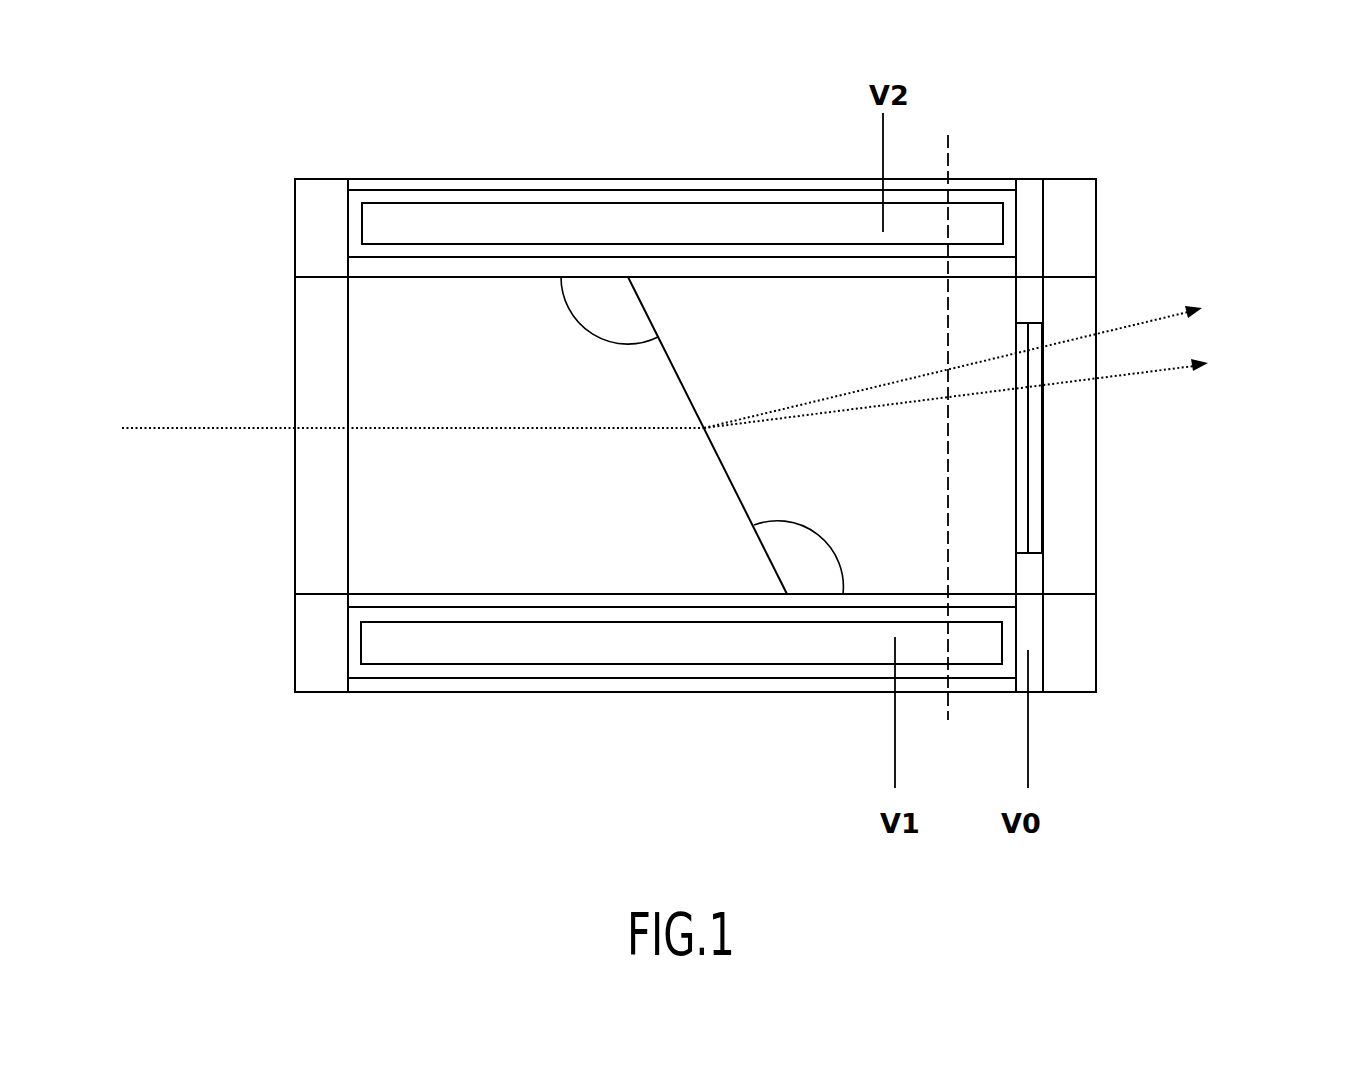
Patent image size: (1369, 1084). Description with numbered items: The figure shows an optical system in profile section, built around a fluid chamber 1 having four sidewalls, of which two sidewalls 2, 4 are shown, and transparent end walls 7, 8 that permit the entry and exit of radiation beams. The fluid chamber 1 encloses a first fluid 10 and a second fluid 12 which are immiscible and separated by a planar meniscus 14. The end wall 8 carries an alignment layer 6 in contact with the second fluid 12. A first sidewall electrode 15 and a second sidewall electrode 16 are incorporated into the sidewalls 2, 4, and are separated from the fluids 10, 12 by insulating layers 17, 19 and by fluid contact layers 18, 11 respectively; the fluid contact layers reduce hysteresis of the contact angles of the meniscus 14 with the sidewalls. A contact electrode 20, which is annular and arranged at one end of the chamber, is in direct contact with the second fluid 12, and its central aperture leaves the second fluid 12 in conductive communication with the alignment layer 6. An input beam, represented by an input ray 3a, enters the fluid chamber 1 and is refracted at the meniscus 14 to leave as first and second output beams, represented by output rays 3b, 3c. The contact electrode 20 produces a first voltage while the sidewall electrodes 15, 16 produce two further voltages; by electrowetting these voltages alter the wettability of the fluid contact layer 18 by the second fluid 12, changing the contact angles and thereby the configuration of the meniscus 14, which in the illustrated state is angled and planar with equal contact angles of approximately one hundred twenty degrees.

The fluid chamber 1 is at (232, 146).
The sidewall 2 is at (360, 281).
The input ray 3a is at (122, 427).
The output ray 3b is at (1203, 307).
The output ray 3c is at (1210, 365).
The sidewall 4 is at (695, 594).
The alignment layer 6 is at (1038, 440).
The end wall 7 is at (293, 507).
The end wall 8 is at (1096, 437).
The first fluid 10 is at (428, 489).
The fluid contact layer 11 is at (488, 265).
The second fluid 12 is at (992, 512).
The meniscus 14 is at (680, 288).
The first sidewall electrode 15 is at (502, 638).
The second sidewall electrode 16 is at (605, 225).
The insulating layer 17 is at (422, 613).
The fluid contact layer 18 is at (614, 599).
The insulating layer 19 is at (393, 250).
The contact electrode 20 is at (1030, 207).